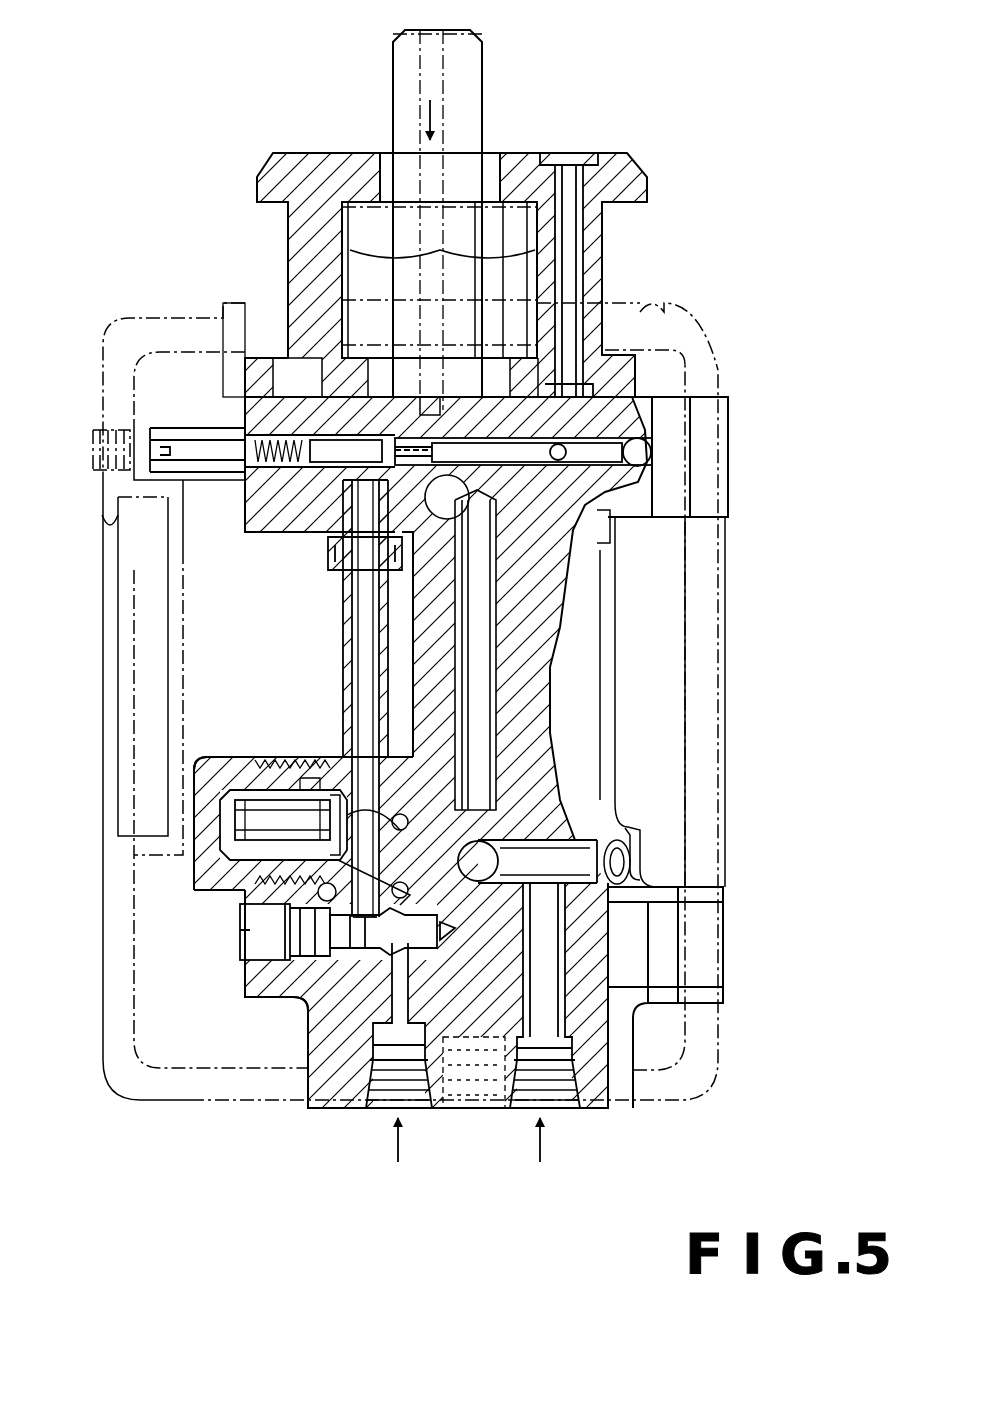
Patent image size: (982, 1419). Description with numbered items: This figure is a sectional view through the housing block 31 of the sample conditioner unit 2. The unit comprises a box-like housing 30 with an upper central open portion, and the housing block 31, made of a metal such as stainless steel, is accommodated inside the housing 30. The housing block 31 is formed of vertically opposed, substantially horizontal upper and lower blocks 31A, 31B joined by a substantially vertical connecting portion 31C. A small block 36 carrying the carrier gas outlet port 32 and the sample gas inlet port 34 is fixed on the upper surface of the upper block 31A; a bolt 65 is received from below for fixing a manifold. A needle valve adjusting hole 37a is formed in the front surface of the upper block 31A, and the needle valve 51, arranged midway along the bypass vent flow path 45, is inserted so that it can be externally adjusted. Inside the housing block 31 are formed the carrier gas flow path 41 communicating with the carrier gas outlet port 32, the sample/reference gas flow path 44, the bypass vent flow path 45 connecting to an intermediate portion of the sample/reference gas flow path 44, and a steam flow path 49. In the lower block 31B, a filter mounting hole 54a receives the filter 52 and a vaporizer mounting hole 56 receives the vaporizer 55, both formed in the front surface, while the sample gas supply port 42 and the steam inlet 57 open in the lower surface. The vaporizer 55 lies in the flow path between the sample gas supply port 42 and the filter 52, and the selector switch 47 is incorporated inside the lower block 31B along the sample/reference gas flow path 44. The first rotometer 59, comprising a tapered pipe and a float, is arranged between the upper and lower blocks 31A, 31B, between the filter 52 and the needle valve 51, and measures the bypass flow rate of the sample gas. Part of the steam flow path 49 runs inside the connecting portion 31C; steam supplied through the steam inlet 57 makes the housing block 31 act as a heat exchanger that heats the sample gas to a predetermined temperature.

The sample conditioner unit 2 is at (800, 366).
The box-like housing 30 is at (100, 950).
The housing block 31 is at (340, 1112).
The upper block 31A is at (245, 534).
The lower block 31B is at (258, 756).
The connecting portion 31C is at (615, 683).
The carrier gas outlet port 32 is at (570, 153).
The sample gas inlet port 34 is at (430, 158).
The small block 36 is at (622, 372).
The needle valve adjusting hole 37a is at (300, 440).
The carrier gas flow path 41 is at (598, 183).
The sample gas supply port 42 is at (382, 1112).
The sample/reference gas flow path 44 is at (305, 1078).
The bypass vent flow path 45 is at (605, 475).
The selector switch 47 is at (588, 800).
The steam flow path 49 is at (480, 637).
The needle valve 51 is at (178, 418).
The filter 52 is at (232, 862).
The filter mounting hole 54a is at (330, 798).
The vaporizer 55 is at (235, 940).
The vaporizer mounting hole 56 is at (300, 958).
The steam inlet 57 is at (565, 1118).
The first rotometer 59 is at (343, 596).
The bolt 65 is at (484, 80).